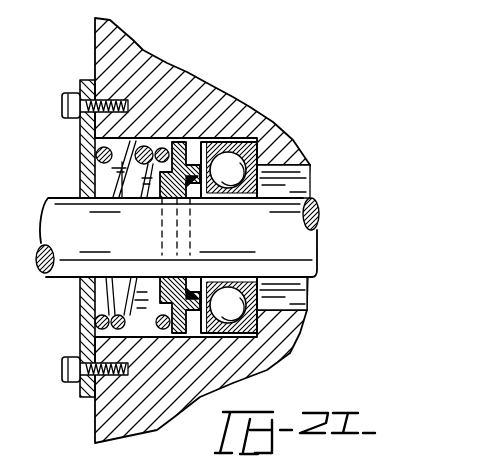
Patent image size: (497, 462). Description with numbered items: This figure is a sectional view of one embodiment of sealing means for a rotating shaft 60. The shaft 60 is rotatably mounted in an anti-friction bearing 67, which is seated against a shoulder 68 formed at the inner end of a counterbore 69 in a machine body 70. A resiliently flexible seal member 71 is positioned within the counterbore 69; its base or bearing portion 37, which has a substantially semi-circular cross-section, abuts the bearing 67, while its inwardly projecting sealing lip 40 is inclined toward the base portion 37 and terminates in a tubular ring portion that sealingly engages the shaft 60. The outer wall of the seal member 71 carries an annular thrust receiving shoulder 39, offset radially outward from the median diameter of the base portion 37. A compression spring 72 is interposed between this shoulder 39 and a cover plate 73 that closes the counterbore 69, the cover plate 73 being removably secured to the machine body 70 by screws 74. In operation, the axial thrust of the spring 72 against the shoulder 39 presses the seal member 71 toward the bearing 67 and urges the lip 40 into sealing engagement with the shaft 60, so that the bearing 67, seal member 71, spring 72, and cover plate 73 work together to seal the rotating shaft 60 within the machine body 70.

The base end 37 is at (192, 179).
The thrust receiving shoulder 39 is at (166, 138).
The sealing lip 40 is at (181, 279).
The shaft 60 is at (58, 223).
The anti-friction bearing 67 is at (237, 147).
The shoulder 68 is at (262, 152).
The counterbore 69 is at (119, 166).
The machine body 70 is at (218, 100).
The seal member 71 is at (158, 197).
The compression spring 72 is at (120, 290).
The cover plate 73 is at (82, 309).
The screws 74 is at (62, 368).